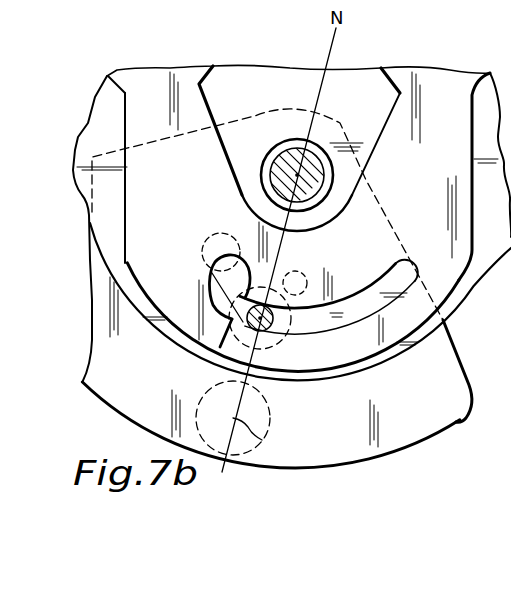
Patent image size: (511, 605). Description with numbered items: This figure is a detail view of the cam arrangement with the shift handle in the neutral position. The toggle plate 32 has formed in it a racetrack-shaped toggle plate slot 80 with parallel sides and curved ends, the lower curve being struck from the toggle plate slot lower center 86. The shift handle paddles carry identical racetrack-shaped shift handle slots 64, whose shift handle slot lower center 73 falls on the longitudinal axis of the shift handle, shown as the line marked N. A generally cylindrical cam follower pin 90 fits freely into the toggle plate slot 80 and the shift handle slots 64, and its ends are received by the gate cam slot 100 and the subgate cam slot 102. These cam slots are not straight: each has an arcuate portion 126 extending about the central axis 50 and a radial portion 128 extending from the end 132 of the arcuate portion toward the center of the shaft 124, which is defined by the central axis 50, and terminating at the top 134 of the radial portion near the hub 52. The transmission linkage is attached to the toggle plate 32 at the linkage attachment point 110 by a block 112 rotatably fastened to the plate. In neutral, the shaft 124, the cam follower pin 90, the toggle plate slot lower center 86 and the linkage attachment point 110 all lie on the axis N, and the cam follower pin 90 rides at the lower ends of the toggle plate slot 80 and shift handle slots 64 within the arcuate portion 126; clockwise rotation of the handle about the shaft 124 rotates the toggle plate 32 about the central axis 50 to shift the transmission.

The toggle plate 32 is at (402, 437).
The central axis 50 is at (322, 148).
The hub 52 is at (363, 180).
The shift handle slots 64 is at (302, 271).
The shift handle slot lower center 73 is at (300, 301).
The toggle plate slot 80 is at (222, 233).
The toggle plate slot lower center 86 is at (278, 332).
The cam follower pin 90 is at (246, 330).
The gate cam slot 100 is at (353, 331).
The subgate cam slot 102 is at (395, 311).
The linkage attachment point 110 is at (262, 440).
The block 112 is at (268, 406).
The shaft 124 is at (270, 172).
The arcuate portion 126 is at (366, 316).
The radial portion 128 is at (211, 272).
The end of cam slot arcuate portion 132 is at (212, 316).
The top of cam slot radial portion 134 is at (216, 246).